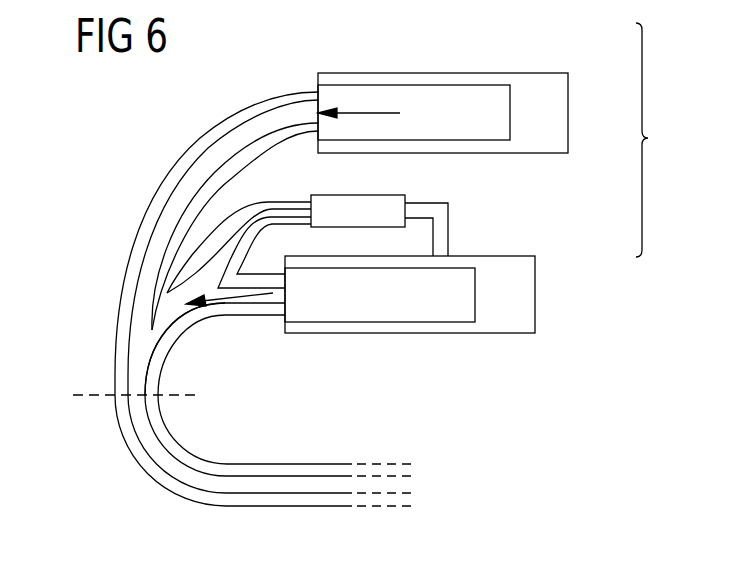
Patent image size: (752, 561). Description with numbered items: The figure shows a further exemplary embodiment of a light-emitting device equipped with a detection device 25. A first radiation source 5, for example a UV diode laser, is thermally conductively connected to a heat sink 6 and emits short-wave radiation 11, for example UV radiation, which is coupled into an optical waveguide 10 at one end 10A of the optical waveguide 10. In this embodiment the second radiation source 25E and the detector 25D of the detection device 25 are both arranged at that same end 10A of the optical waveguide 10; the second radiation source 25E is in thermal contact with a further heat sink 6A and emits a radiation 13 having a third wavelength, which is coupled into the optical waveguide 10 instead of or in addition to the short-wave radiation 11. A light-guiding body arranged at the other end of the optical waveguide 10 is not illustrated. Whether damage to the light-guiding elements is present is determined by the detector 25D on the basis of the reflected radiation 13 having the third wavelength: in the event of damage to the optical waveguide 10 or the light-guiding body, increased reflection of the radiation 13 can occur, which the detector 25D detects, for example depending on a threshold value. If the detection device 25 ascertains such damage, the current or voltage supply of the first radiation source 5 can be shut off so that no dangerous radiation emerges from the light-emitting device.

The radiation source 5 is at (393, 318).
The heat sink 6 is at (525, 293).
The further heat sink 6A is at (556, 113).
The optical waveguide 10 is at (115, 397).
The end of the optical waveguide 10A is at (158, 395).
The short-wave radiation 11 is at (249, 300).
The radiation having a third wavelength 13 is at (362, 110).
The detection device 25 is at (660, 140).
The detector 25D is at (384, 203).
The second radiation source 25E is at (453, 97).